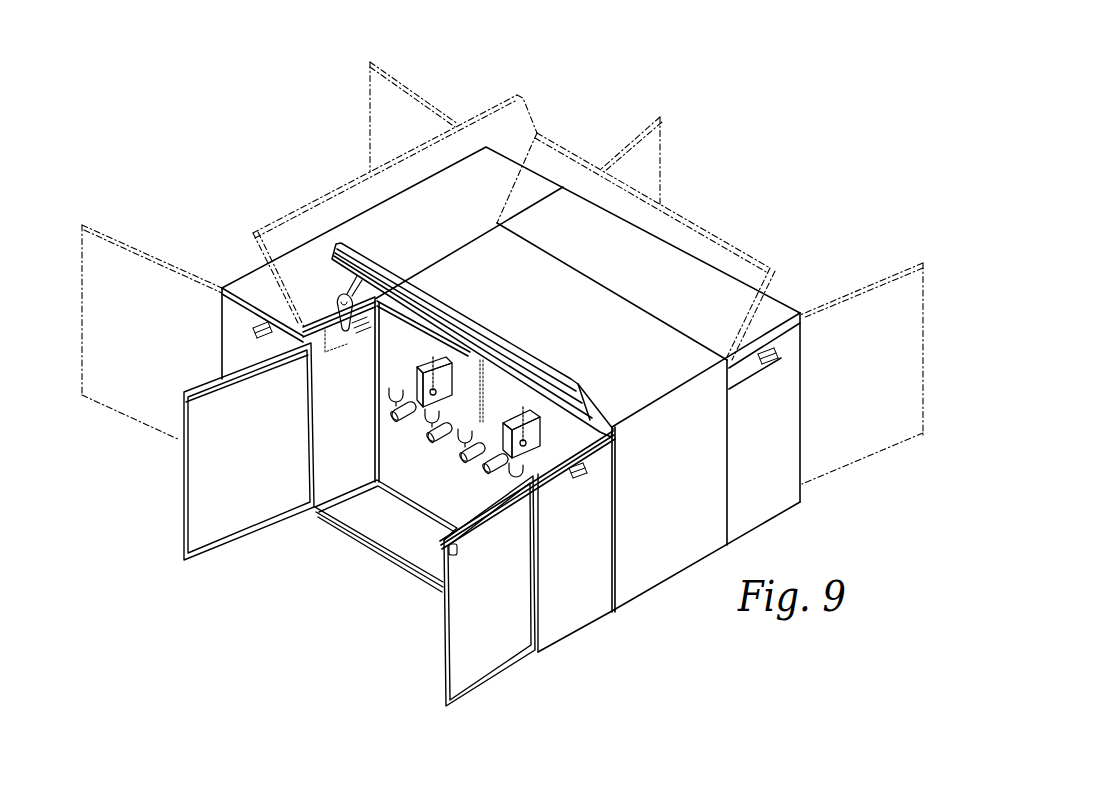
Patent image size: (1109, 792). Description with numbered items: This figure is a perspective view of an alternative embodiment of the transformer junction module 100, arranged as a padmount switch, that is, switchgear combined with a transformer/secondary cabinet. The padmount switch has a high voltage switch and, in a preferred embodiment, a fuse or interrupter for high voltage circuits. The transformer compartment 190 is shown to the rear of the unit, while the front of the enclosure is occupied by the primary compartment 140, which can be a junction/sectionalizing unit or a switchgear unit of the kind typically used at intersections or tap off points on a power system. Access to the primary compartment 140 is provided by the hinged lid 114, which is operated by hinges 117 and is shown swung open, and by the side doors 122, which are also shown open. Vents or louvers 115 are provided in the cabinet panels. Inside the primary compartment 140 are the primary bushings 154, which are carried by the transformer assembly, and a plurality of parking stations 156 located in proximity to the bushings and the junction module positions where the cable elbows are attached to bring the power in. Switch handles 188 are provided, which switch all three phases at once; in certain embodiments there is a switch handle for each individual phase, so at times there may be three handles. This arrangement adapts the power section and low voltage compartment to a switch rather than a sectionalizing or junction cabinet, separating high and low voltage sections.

The transformer junction module 100 is at (706, 183).
The hinged lid 114 is at (452, 312).
The vents or louvers 115 is at (583, 478).
The hinges 117 is at (338, 303).
The side door 122 is at (216, 470).
The primary compartment 140 is at (428, 545).
The primary bushings 154 is at (395, 422).
The parking stations 156 is at (432, 433).
The switch handles 188 is at (470, 385).
The transformer compartment 190 is at (258, 292).